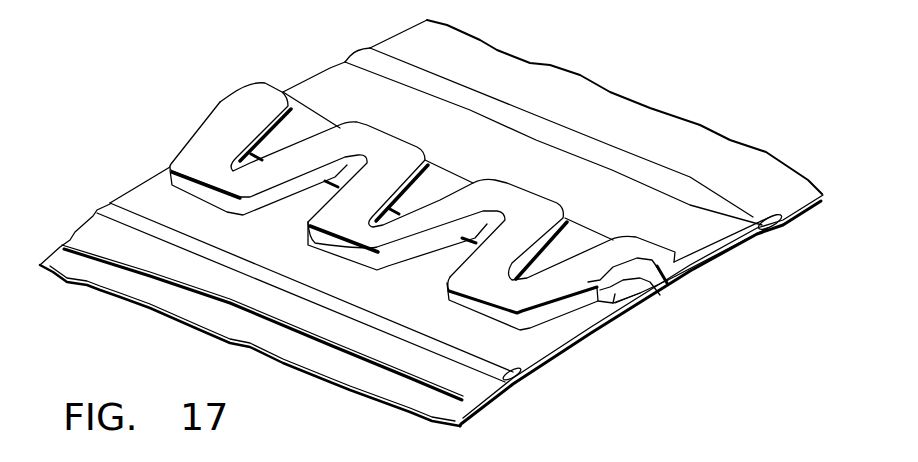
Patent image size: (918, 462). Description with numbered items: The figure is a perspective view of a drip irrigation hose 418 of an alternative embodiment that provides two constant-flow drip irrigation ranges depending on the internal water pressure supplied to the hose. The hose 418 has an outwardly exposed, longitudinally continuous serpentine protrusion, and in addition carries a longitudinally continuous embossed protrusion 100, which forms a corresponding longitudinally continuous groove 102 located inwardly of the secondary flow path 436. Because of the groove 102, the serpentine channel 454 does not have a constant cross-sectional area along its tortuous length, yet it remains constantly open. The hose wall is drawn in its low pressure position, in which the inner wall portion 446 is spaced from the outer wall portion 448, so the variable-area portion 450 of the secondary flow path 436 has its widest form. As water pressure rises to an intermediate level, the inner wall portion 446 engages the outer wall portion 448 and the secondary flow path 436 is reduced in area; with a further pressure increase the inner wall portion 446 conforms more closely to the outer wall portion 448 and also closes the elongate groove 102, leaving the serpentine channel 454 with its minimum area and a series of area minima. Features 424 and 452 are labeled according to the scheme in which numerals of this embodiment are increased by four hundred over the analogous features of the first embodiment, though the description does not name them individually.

The drip irrigation hose 418 is at (606, 91).
The embossed protrusion 100 is at (453, 249).
The groove 102 is at (634, 297).
The front flange 424 is at (263, 342).
The secondary flow path 436 is at (591, 328).
The inner wall portion 446 is at (655, 290).
The outer wall portion 448 is at (704, 256).
The variable-area portion 450 is at (706, 265).
The raised platform 452 is at (187, 190).
The serpentine channel 454 is at (665, 266).